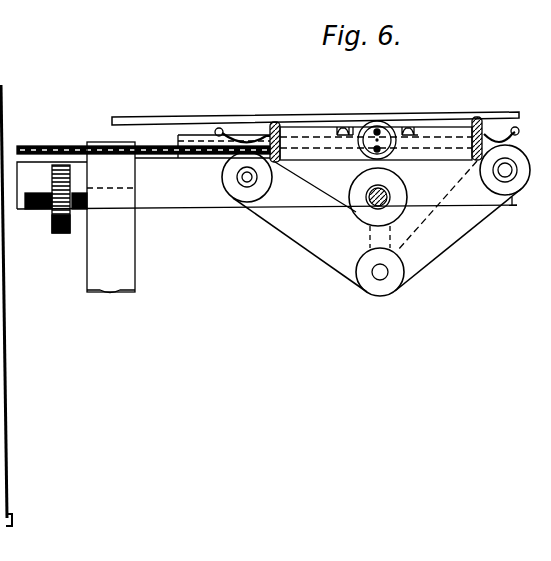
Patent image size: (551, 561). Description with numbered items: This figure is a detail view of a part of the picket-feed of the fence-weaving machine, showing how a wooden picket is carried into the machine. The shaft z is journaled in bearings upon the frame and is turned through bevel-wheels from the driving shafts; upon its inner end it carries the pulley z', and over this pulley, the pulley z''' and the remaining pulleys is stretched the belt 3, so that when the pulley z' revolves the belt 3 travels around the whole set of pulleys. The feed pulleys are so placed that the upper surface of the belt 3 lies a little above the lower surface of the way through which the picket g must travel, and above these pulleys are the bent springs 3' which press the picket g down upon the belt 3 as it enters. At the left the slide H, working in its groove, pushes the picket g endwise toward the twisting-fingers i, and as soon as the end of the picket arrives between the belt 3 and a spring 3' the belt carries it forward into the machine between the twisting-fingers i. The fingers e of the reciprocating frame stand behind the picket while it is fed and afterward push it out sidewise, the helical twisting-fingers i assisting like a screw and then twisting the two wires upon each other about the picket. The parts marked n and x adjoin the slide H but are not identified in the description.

The picket g is at (59, 147).
The slide H is at (33, 195).
The gear n is at (62, 234).
The bracket x is at (111, 217).
The bent springs 3' is at (368, 124).
The fingers e is at (281, 162).
The twisting-fingers i is at (396, 158).
The pulley z' is at (306, 180).
The shaft z is at (378, 208).
The pulley z''' is at (383, 272).
The belt 3 is at (377, 240).